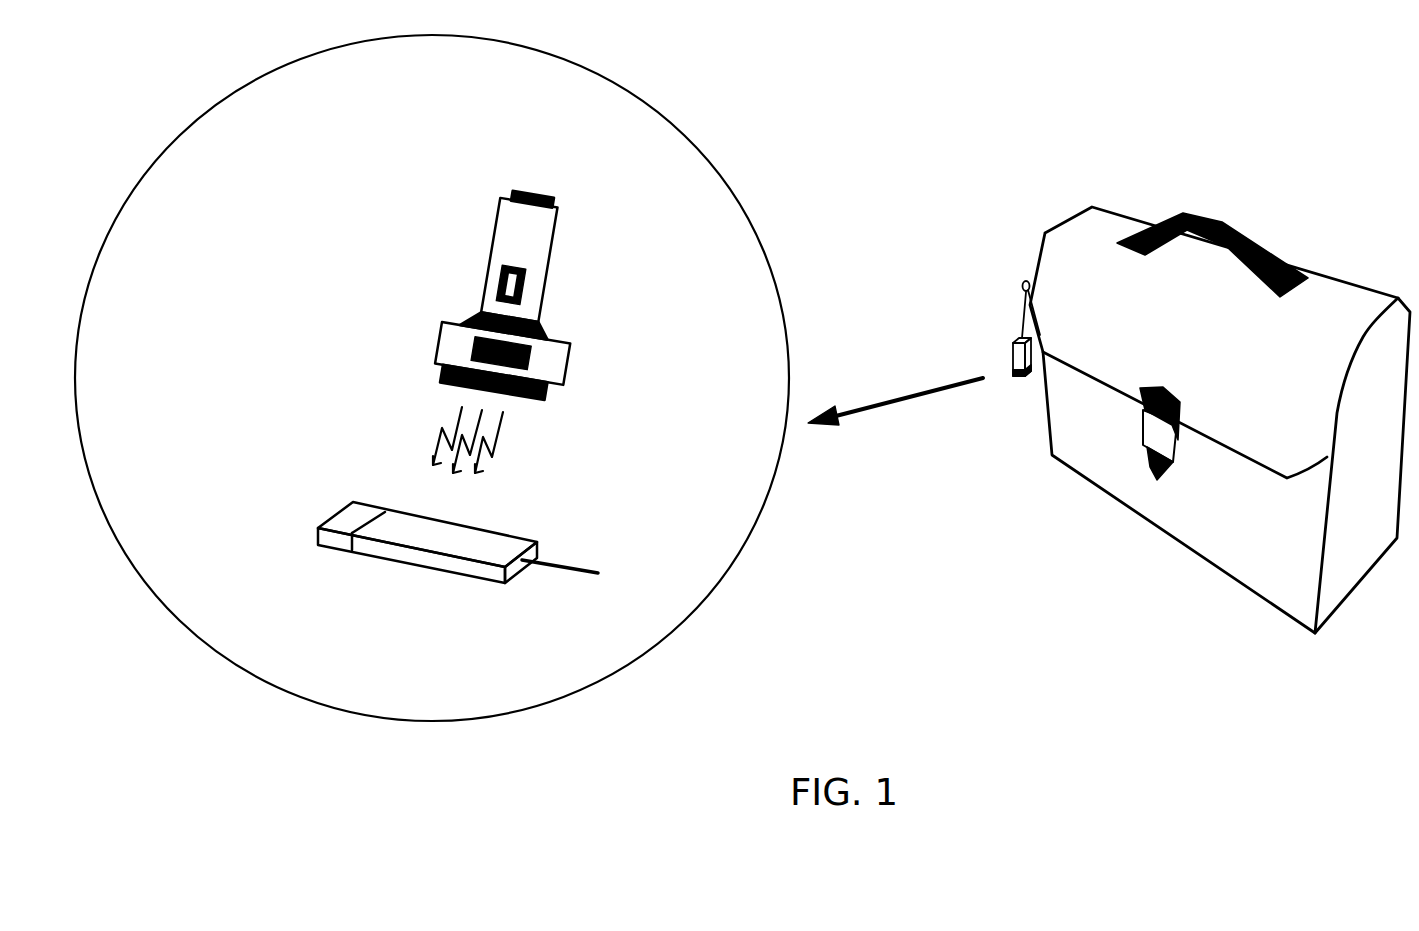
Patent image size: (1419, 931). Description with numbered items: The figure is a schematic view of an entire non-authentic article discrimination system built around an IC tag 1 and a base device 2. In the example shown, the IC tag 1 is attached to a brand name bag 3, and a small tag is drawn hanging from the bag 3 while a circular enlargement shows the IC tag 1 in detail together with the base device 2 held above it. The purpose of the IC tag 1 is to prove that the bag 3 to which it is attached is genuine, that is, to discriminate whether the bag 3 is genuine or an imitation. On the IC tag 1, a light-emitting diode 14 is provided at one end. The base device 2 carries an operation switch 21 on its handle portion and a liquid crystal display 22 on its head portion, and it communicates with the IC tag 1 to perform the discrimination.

The IC tag 1 is at (1013, 347).
The base device 2 is at (497, 218).
The bag 3 is at (1122, 222).
The light-emitting diode 14 is at (352, 502).
The operation switch 21 is at (523, 280).
The liquid crystal display 22 is at (528, 362).